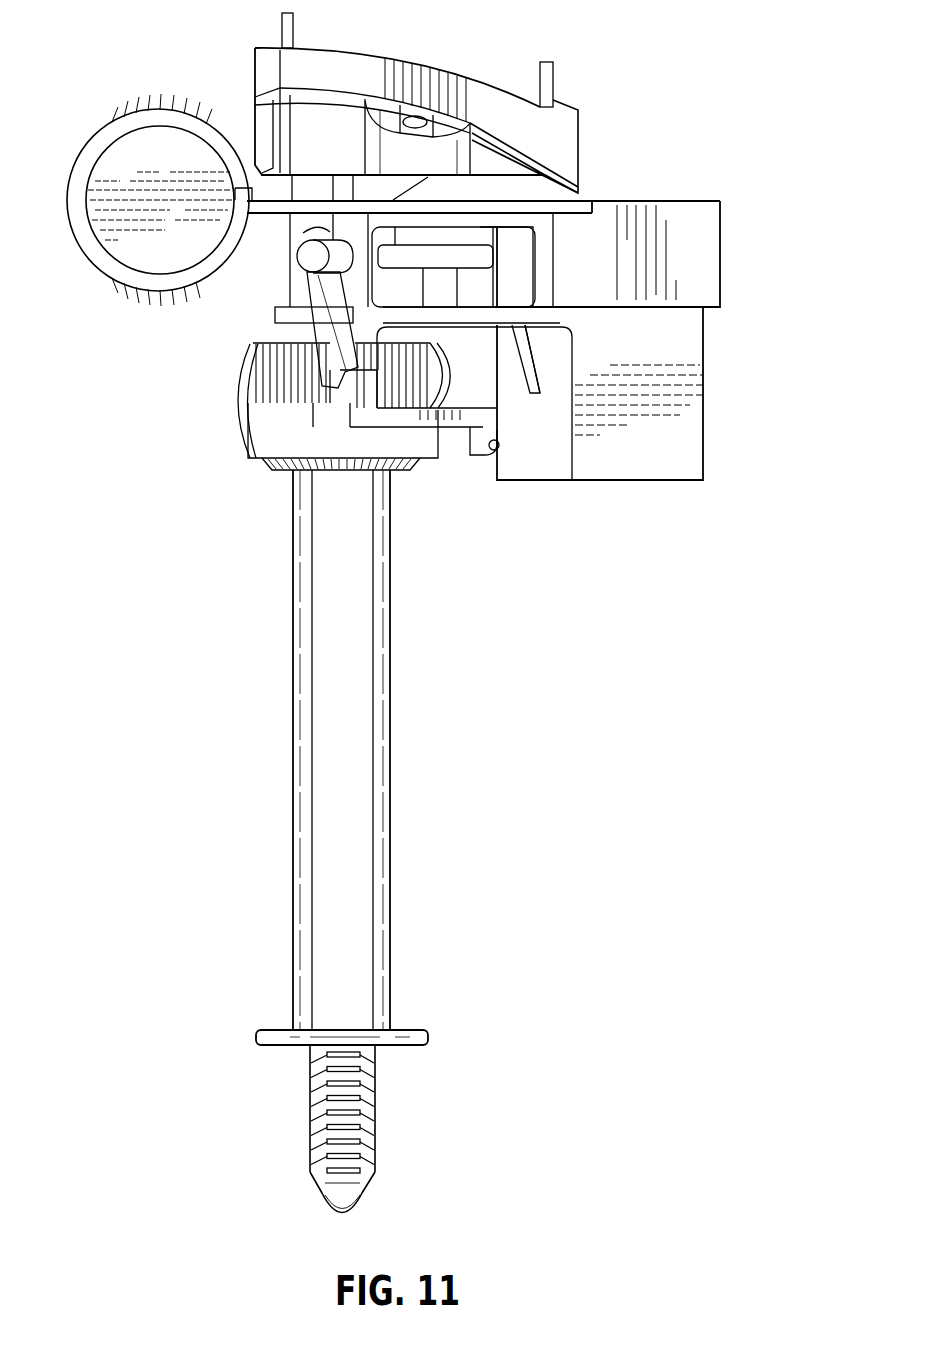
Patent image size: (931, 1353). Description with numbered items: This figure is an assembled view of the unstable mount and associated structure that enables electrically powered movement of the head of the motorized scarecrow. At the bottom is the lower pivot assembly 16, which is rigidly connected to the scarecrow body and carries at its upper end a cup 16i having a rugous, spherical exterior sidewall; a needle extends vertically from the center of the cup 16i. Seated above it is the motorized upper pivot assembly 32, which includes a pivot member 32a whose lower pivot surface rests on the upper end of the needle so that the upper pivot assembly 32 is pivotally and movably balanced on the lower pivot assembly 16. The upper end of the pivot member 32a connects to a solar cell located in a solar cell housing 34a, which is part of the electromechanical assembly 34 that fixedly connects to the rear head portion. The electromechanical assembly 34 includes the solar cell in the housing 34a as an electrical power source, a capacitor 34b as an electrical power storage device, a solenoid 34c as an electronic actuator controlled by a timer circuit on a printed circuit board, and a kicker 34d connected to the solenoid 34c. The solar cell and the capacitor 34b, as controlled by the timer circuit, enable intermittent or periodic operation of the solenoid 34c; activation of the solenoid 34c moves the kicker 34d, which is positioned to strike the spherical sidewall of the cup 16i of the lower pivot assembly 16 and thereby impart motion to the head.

The lower pivot assembly 16 is at (447, 827).
The cup 16i is at (240, 396).
The motorized upper pivot assembly 32 is at (365, 300).
The pivot member 32a is at (312, 336).
The electromechanical assembly 34 is at (410, 246).
The solar cell housing 34a is at (470, 85).
The capacitor 34b is at (120, 168).
The solenoid 34c is at (690, 352).
The kicker 34d is at (350, 348).